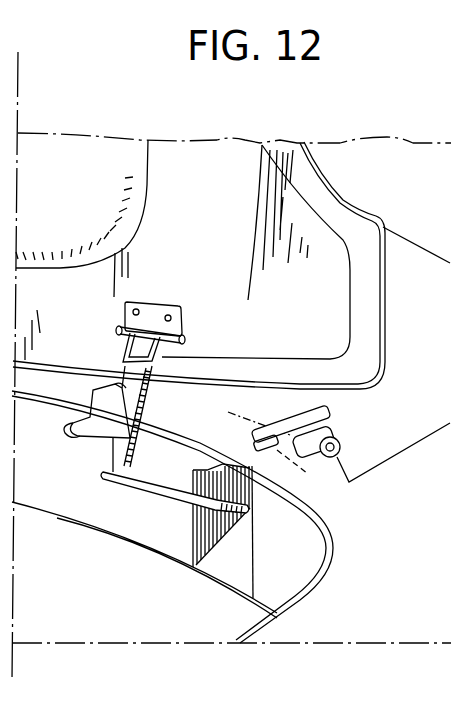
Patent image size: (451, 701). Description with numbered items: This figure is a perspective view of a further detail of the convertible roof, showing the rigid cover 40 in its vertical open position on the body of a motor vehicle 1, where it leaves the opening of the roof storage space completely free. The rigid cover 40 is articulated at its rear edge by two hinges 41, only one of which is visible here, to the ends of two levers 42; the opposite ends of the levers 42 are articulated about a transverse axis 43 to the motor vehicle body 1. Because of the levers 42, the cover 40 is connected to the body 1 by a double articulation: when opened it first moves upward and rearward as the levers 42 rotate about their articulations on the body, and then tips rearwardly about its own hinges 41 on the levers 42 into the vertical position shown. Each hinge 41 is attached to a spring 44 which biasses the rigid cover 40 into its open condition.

The body of a motor vehicle 1 is at (209, 517).
The rigid cover 40 is at (312, 240).
The hinge 41 is at (152, 313).
The lever 42 is at (110, 452).
The transverse axis 43 is at (337, 448).
The spring 44 is at (158, 356).